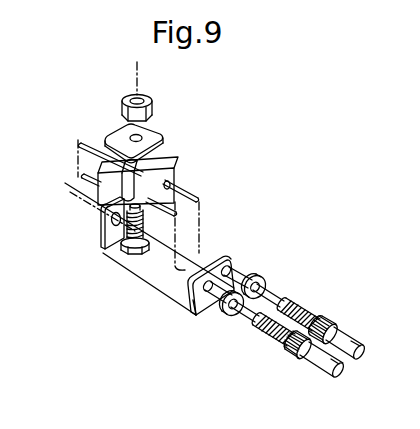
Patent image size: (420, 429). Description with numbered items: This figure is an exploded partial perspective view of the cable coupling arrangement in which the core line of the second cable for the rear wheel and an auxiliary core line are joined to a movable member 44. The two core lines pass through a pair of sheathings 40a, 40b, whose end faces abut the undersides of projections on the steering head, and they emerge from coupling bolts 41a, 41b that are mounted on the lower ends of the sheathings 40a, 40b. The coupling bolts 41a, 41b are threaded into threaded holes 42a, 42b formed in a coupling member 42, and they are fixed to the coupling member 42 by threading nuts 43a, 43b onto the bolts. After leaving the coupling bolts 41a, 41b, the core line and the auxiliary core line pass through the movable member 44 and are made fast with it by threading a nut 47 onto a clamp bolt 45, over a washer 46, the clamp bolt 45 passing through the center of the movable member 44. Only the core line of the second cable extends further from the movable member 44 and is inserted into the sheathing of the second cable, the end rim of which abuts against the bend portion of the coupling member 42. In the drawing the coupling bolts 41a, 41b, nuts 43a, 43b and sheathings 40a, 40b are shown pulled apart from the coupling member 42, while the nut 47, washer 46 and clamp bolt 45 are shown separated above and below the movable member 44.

The sheathing 40a is at (348, 336).
The sheathing 40b is at (316, 362).
The coupling bolt 41a is at (314, 310).
The coupling bolt 41b is at (272, 334).
The coupling member 42 is at (132, 268).
The threaded hole 42a is at (237, 263).
The threaded hole 42b is at (198, 313).
The nut 43a is at (268, 285).
The nut 43b is at (229, 320).
The movable member 44 is at (97, 188).
The clamp bolt 45 is at (115, 252).
The washer 46 is at (115, 128).
The nut 47 is at (127, 99).